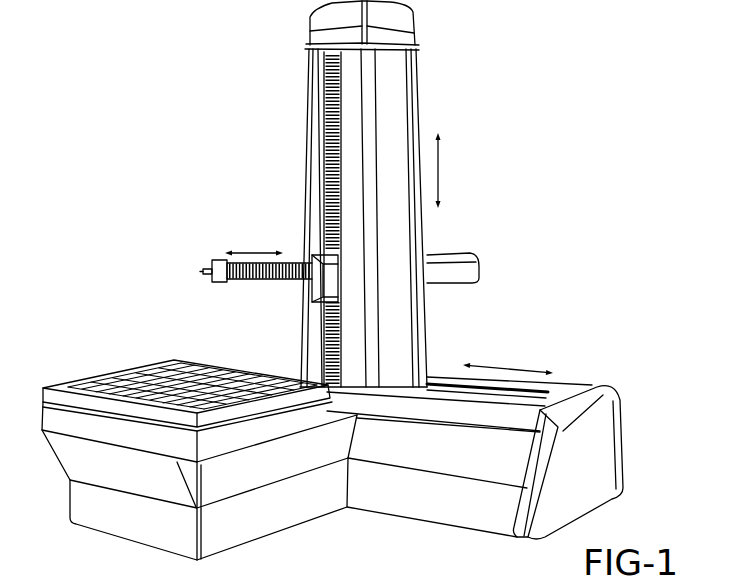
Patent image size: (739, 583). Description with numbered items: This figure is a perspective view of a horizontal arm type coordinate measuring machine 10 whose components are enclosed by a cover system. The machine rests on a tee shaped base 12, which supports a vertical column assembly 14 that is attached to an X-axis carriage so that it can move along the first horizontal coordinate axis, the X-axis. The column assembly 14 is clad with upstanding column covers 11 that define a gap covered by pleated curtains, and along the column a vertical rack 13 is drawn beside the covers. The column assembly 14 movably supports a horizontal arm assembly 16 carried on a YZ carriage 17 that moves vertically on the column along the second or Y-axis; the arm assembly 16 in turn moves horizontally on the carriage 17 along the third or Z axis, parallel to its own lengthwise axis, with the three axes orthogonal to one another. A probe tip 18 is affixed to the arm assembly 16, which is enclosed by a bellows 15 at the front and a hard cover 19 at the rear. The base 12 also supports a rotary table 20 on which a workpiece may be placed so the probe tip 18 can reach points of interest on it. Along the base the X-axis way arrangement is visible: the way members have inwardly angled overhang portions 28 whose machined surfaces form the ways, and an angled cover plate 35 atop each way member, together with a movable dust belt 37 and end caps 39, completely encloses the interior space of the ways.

The coordinate measuring machine 10 is at (628, 312).
The column covers 11 is at (306, 171).
The base 12 is at (507, 476).
The vertical rack 13 is at (333, 106).
The vertical column assembly 14 is at (519, 28).
The bellows 15 is at (223, 266).
The horizontal arm assembly 16 is at (255, 279).
The YZ carriage 17 is at (323, 290).
The probe tip 18 is at (199, 270).
The hard cover 19 is at (470, 255).
The rotary table 20 is at (80, 386).
The overhang portion 28 is at (502, 472).
The angled cover plate 35 is at (496, 402).
The dust belt 37 is at (560, 383).
The end caps 39 is at (610, 452).